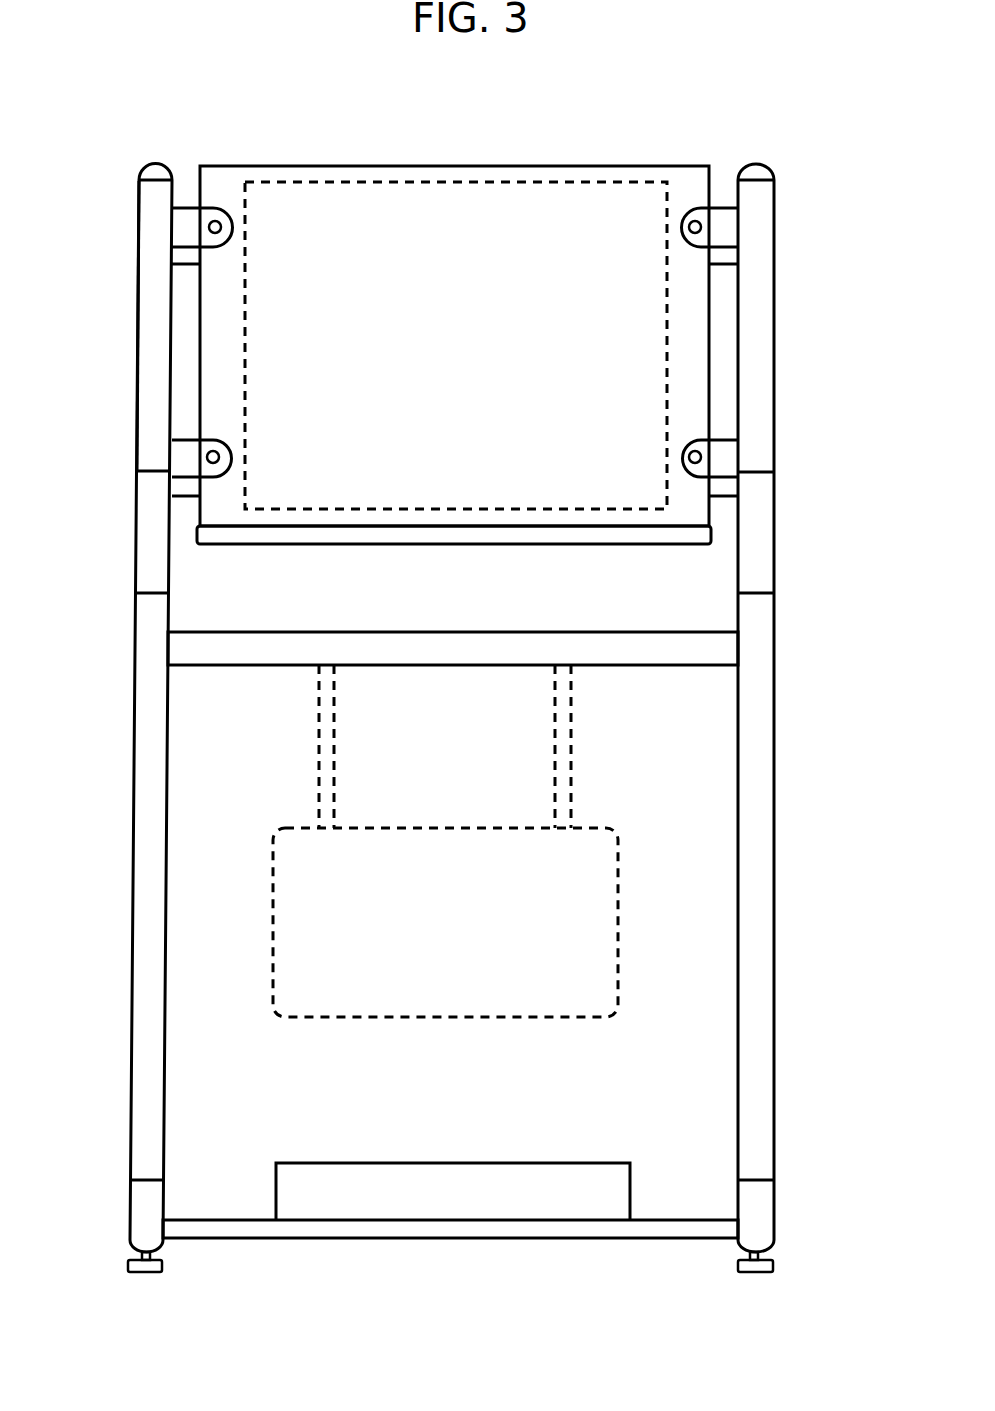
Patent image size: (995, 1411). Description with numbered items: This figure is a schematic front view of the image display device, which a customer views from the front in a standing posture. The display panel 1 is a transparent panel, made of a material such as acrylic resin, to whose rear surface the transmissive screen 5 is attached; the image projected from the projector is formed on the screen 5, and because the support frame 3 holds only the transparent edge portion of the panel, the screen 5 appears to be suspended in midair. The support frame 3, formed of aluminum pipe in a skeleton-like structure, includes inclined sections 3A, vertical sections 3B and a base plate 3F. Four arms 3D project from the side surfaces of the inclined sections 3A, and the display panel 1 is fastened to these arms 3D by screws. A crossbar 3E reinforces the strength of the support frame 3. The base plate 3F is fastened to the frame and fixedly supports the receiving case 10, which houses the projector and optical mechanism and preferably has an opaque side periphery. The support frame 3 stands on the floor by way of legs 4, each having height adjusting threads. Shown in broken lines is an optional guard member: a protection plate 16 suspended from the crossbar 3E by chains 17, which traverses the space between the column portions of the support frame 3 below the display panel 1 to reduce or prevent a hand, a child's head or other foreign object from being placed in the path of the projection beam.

The display panel 1 is at (420, 165).
The support frame 3 is at (137, 253).
The inclined sections 3A is at (148, 357).
The vertical sections 3B is at (755, 864).
The arms 3D is at (722, 220).
The crossbar 3E is at (440, 657).
The base plate 3F is at (520, 1238).
The legs 4 is at (765, 1262).
The screen 5 is at (516, 194).
The receiving case 10 is at (420, 1176).
The protection plate 16 is at (302, 924).
The chains 17 is at (322, 753).